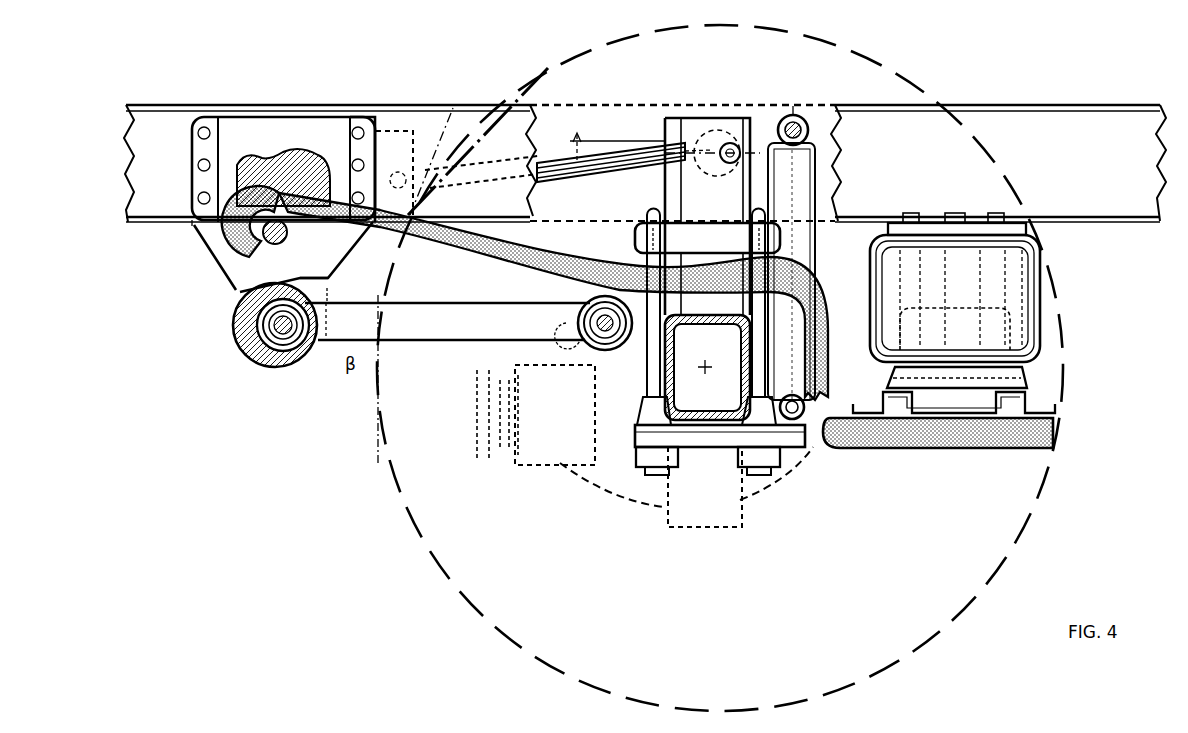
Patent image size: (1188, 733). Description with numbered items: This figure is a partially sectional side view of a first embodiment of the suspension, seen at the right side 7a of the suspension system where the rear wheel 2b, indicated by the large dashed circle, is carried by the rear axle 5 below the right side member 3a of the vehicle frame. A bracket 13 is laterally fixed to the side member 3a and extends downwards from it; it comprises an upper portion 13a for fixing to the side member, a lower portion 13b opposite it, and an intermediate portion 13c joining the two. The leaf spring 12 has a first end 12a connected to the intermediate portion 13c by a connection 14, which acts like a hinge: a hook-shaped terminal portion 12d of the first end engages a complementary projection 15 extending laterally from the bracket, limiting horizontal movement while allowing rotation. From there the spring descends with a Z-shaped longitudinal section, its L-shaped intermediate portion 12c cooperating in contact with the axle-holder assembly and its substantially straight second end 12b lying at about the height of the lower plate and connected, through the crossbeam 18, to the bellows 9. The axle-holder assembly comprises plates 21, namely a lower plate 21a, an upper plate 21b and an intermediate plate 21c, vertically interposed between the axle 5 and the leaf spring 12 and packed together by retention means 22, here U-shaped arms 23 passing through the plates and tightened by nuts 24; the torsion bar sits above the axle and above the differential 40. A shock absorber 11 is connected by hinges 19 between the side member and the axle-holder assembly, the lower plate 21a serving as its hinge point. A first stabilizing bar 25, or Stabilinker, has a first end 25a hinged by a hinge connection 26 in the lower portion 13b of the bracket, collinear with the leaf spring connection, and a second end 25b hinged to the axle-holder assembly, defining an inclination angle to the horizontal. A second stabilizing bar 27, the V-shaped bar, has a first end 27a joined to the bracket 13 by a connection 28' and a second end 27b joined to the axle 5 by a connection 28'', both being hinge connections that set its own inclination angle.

The rear wheel 2b is at (945, 628).
The right side member 3a is at (1135, 104).
The rear axle 5 is at (708, 380).
The right side of the suspension system 7a is at (122, 294).
The bellows 9 is at (1020, 285).
The shock absorber 11 is at (808, 118).
The leaf spring 12 is at (928, 449).
The first end of the leaf spring 12a is at (398, 245).
The second end of the leaf spring 12b is at (1057, 440).
The intermediate portion of the leaf spring 12c is at (848, 282).
The hook-shaped terminal portion 12d is at (200, 235).
The bracket 13 is at (256, 153).
The upper portion of the bracket 13a is at (340, 125).
The lower portion of the bracket 13b is at (240, 345).
The intermediate portion of the bracket 13c is at (235, 275).
The connection 14 is at (275, 150).
The projection 15 is at (182, 128).
The crossbeam 18 is at (1030, 400).
The hinge 19 is at (785, 118).
The plates 21 is at (702, 382).
The lower plate 21a is at (800, 455).
The upper plate 21b is at (650, 235).
The intermediate plate 21c is at (800, 270).
The retention means 22 is at (671, 216).
The U-shaped arm 23 is at (720, 162).
The nut 24 is at (745, 480).
The first stabilizing bar 25 is at (420, 345).
The first end of the first stabilizing bar 25a is at (335, 298).
The second end of the first stabilizing bar 25b is at (570, 312).
The hinge connection 26 is at (326, 360).
The second stabilizing bar 27 is at (543, 142).
The first end of the second stabilizing bar 27a is at (440, 120).
The second end of the second stabilizing bar 27b is at (630, 135).
The connection 28' is at (457, 138).
The connection 28'' is at (712, 101).
The differential 40 is at (475, 428).